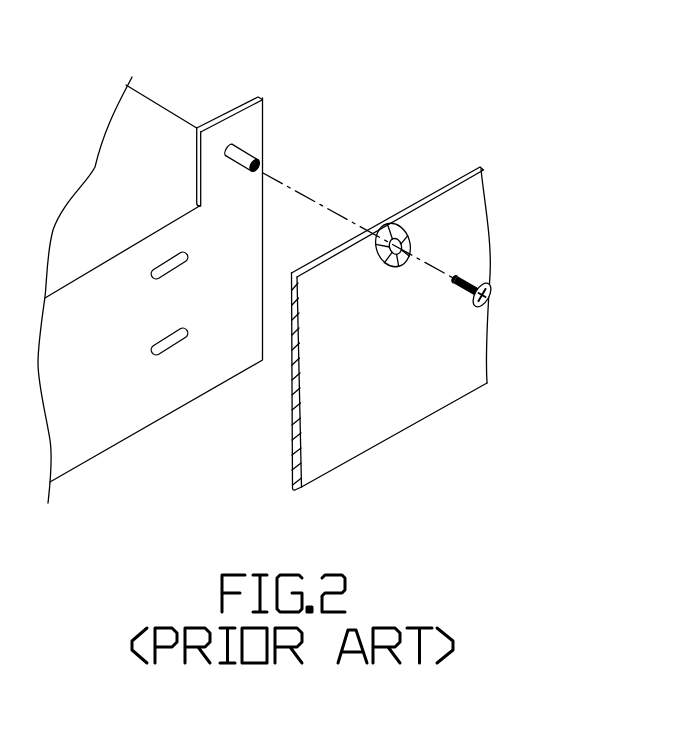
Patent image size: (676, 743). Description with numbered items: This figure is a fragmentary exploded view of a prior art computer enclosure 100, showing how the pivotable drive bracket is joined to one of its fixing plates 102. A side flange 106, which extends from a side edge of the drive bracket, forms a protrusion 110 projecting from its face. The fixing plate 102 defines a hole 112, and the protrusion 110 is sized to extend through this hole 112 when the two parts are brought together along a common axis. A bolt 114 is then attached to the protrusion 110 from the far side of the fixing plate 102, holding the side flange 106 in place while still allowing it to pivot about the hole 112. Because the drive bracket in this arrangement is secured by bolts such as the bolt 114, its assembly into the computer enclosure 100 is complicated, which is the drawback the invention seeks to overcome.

The computer enclosure 100 is at (568, 156).
The fixing plate 102 is at (432, 395).
The side flange 106 is at (262, 116).
The protrusion 110 is at (247, 154).
The hole 112 is at (398, 267).
The bolt 114 is at (488, 301).